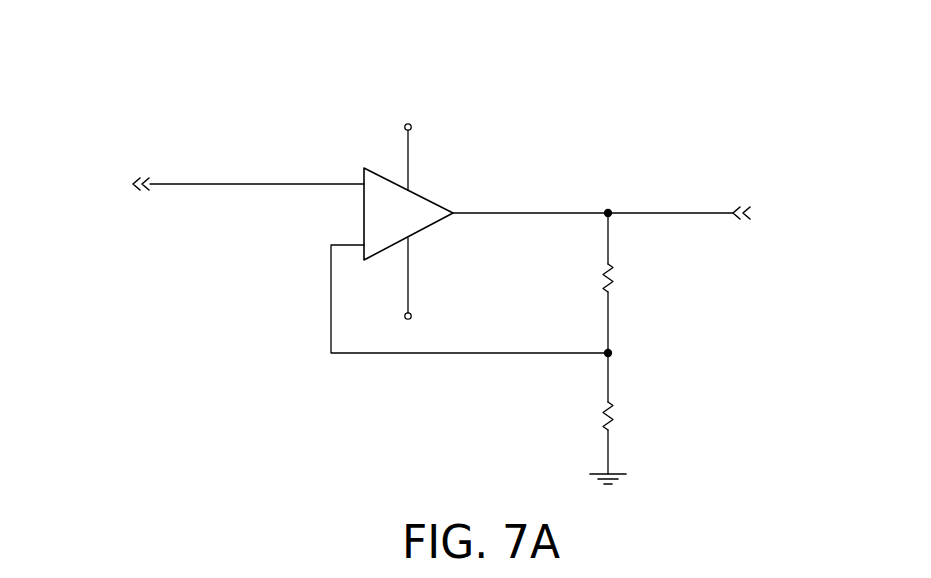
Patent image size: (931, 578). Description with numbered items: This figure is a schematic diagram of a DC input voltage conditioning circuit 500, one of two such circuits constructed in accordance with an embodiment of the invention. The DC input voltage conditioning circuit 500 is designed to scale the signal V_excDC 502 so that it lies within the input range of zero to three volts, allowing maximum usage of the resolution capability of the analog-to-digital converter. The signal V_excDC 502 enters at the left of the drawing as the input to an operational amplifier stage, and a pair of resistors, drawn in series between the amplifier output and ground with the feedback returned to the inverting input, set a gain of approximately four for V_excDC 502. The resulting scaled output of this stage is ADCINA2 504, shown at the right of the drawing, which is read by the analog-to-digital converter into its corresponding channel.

The DC input voltage conditioning circuit 500 is at (533, 131).
The V_excDC 502 is at (74, 202).
The ADCINA2 504 is at (782, 230).